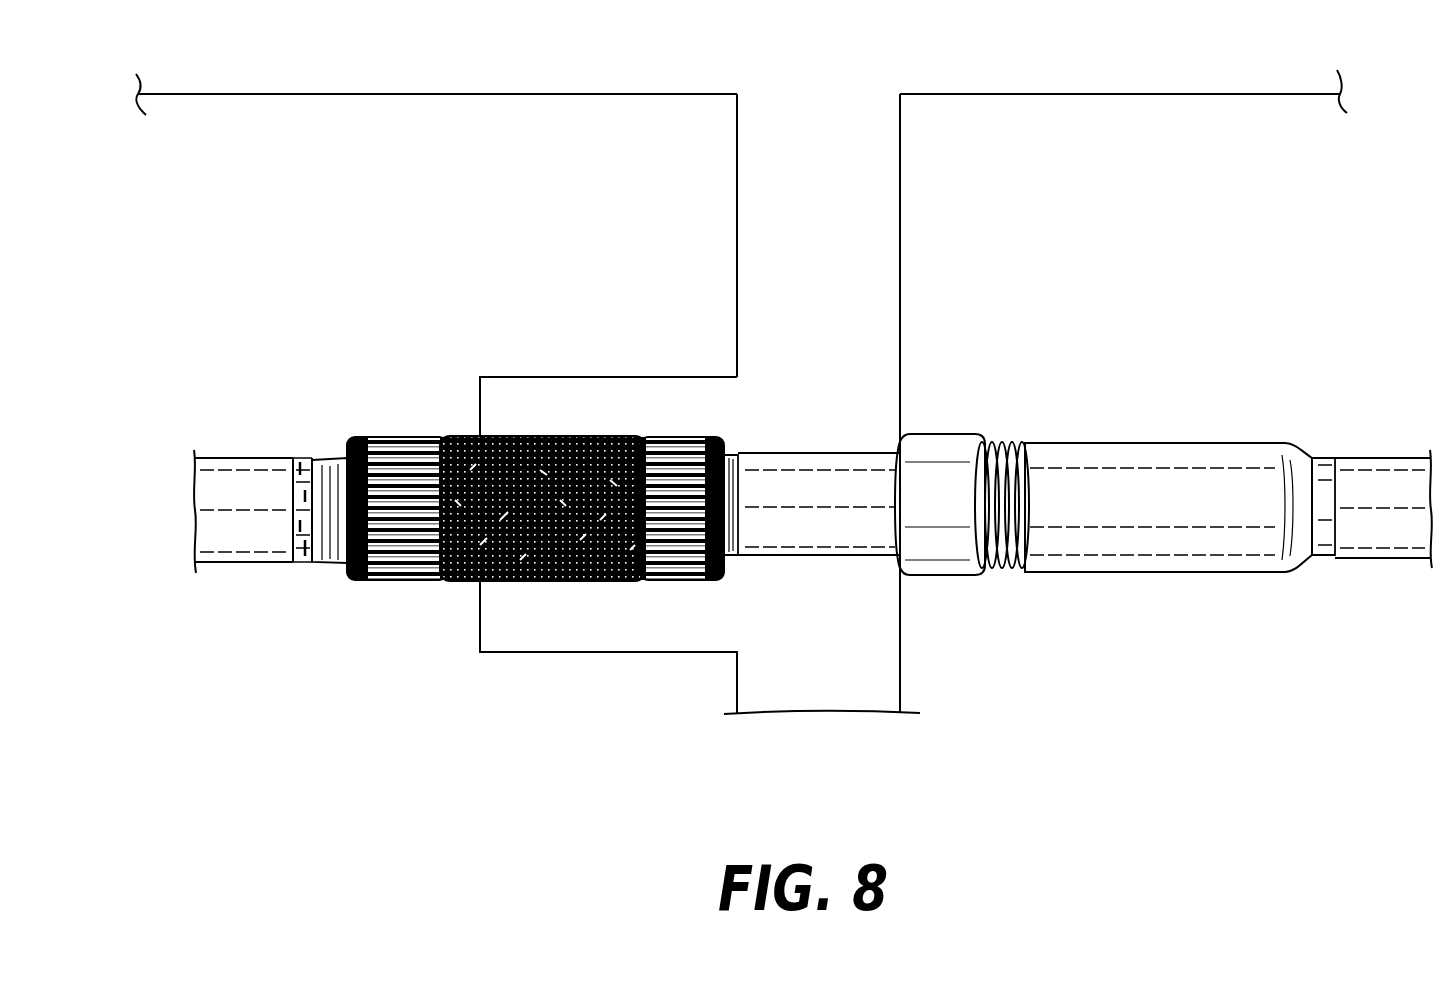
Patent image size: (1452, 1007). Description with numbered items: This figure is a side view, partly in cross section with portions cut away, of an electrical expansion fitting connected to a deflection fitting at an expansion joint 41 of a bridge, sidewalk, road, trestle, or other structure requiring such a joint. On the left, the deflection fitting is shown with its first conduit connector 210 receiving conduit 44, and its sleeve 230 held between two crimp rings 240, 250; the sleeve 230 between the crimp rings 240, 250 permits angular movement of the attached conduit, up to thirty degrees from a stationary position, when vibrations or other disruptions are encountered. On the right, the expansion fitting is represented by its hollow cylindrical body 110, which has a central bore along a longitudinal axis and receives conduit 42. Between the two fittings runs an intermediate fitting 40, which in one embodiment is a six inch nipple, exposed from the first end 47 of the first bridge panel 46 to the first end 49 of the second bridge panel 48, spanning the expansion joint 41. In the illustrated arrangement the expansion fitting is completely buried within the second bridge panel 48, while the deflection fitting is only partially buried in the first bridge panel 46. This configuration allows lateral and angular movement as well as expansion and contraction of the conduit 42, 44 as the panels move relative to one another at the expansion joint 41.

The intermediate fitting 40 is at (832, 536).
The expansion joint 41 is at (804, 60).
The conduit 42 is at (1380, 560).
The conduit 44 is at (231, 538).
The first bridge panel 46 is at (608, 117).
The first end of the first bridge panel 47 is at (740, 120).
The second bridge panel 48 is at (1122, 113).
The first end of the second bridge panel 49 is at (900, 120).
The cylindrical body 110 is at (1115, 538).
The first conduit connector 210 is at (303, 478).
The sleeve 230 is at (547, 443).
The crimp ring 240 is at (408, 570).
The crimp ring 250 is at (676, 548).